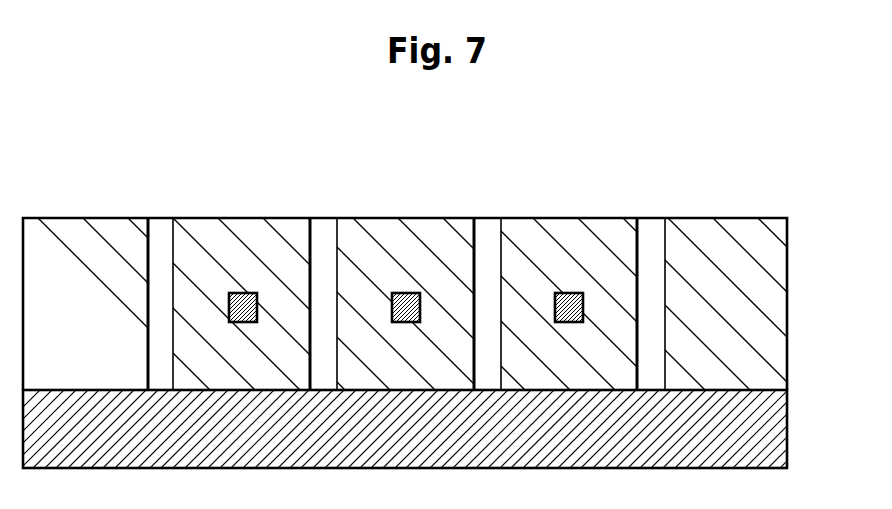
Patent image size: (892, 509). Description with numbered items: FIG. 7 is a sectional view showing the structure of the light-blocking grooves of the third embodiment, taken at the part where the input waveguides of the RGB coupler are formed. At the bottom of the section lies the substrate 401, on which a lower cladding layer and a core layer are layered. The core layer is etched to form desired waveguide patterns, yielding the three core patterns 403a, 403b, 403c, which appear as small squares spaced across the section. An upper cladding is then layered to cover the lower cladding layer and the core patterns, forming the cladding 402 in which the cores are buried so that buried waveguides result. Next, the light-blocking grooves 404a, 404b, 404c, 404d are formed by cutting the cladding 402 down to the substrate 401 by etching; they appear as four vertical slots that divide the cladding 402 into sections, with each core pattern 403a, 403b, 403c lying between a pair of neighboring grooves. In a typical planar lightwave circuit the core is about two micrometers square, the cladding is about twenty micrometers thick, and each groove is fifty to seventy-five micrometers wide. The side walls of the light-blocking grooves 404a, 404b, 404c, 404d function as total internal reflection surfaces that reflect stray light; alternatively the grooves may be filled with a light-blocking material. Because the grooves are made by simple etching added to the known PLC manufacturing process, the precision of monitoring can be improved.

The substrate 401 is at (777, 428).
The cladding 402 is at (775, 307).
The core pattern 403a is at (241, 293).
The core pattern 403b is at (405, 293).
The core pattern 403c is at (568, 293).
The light-blocking groove 404a is at (160, 229).
The light-blocking groove 404b is at (326, 229).
The light-blocking groove 404c is at (487, 229).
The light-blocking groove 404d is at (653, 229).